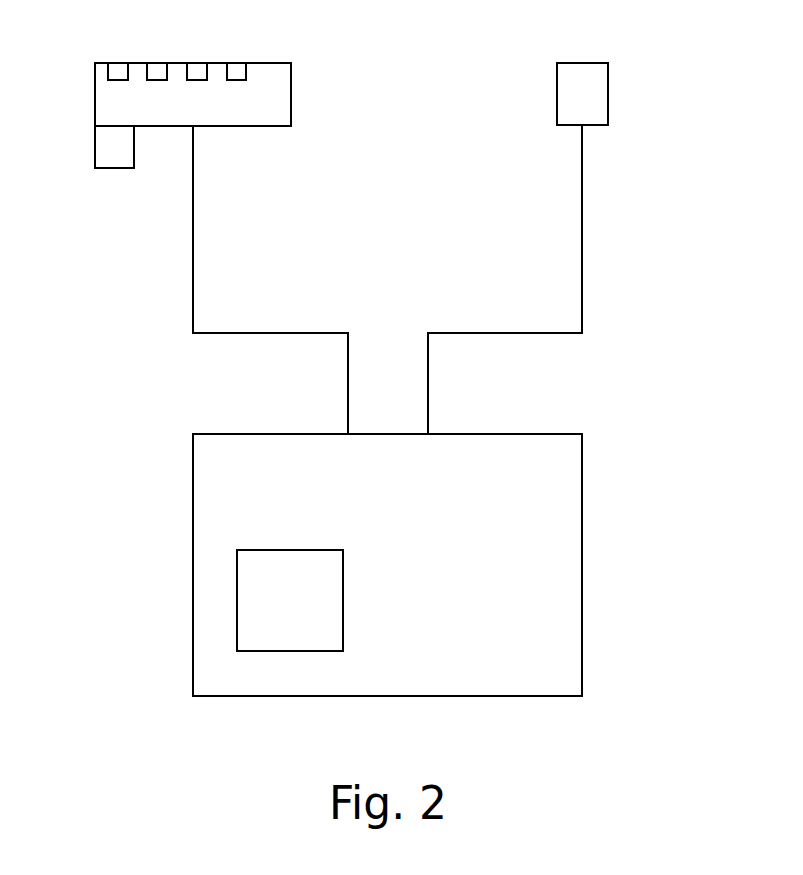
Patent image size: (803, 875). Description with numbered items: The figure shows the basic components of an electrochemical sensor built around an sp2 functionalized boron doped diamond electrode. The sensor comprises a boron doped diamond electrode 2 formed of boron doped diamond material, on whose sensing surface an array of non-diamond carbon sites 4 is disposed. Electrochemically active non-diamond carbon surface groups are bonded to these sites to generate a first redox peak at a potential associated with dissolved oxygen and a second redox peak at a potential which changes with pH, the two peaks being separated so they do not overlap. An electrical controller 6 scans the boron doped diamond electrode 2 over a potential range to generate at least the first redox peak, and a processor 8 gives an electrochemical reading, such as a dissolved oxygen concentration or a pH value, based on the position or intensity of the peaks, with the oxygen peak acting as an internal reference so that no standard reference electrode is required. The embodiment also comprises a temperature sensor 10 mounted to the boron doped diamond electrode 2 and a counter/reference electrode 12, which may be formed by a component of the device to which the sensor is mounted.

The boron doped diamond electrode 2 is at (291, 86).
The array of non-diamond carbon sites 4 is at (197, 70).
The electrical controller 6 is at (582, 499).
The processor 8 is at (237, 614).
The temperature sensor 10 is at (113, 168).
The counter/reference electrode 12 is at (608, 83).